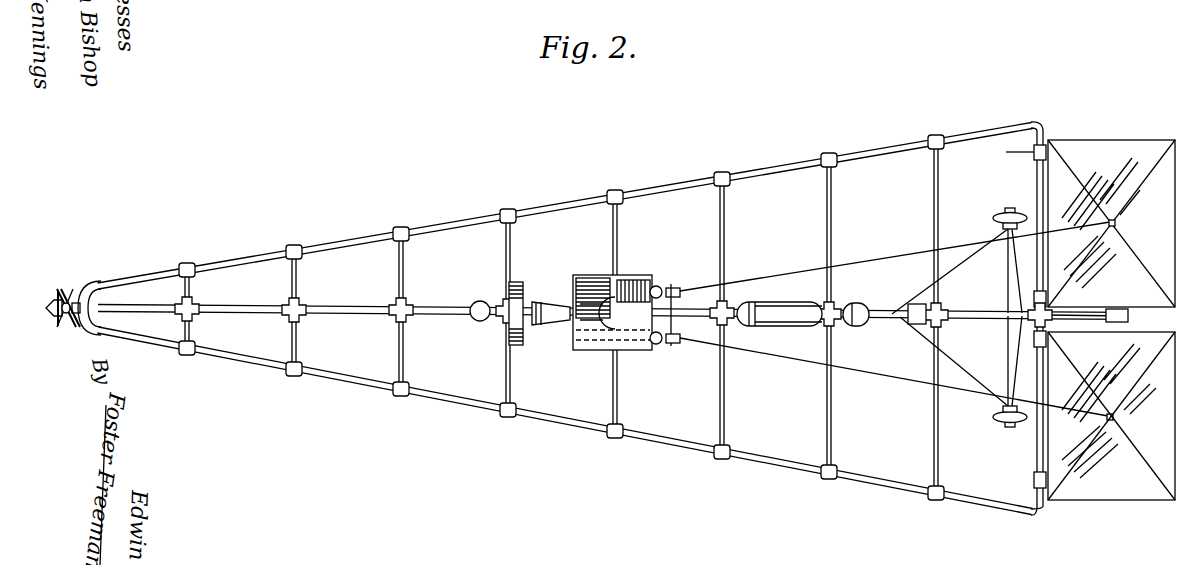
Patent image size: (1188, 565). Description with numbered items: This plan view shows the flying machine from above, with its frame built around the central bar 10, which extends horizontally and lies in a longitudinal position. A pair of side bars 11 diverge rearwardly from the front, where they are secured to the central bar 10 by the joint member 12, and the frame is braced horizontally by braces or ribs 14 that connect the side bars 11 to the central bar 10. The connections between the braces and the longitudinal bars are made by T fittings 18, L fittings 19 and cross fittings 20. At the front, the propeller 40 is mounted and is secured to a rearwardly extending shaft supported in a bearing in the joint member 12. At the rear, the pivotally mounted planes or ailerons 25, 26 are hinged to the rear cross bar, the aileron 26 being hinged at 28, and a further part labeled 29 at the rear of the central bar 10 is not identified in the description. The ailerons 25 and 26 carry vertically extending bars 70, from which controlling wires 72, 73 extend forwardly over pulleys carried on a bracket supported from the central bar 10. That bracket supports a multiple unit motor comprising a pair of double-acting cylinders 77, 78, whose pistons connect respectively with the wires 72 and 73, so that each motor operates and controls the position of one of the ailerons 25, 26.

The central bar 10 is at (348, 297).
The side bars 11 is at (438, 226).
The joint member 12 is at (91, 294).
The horizontal braces 14 is at (618, 228).
The T fittings 18 is at (504, 221).
The L fittings 19 is at (1040, 124).
The cross fittings 20 is at (414, 304).
The aileron 25 is at (1144, 142).
The aileron 26 is at (1108, 494).
The hinge 28 is at (1034, 480).
The rear extension of central rod 29 is at (1110, 314).
The propeller 40 is at (58, 296).
The vertically extending bars 70 is at (1108, 222).
The controlling wire 72 is at (872, 264).
The controlling wire 73 is at (884, 378).
The cylinder 77 is at (660, 287).
The cylinder 78 is at (660, 344).